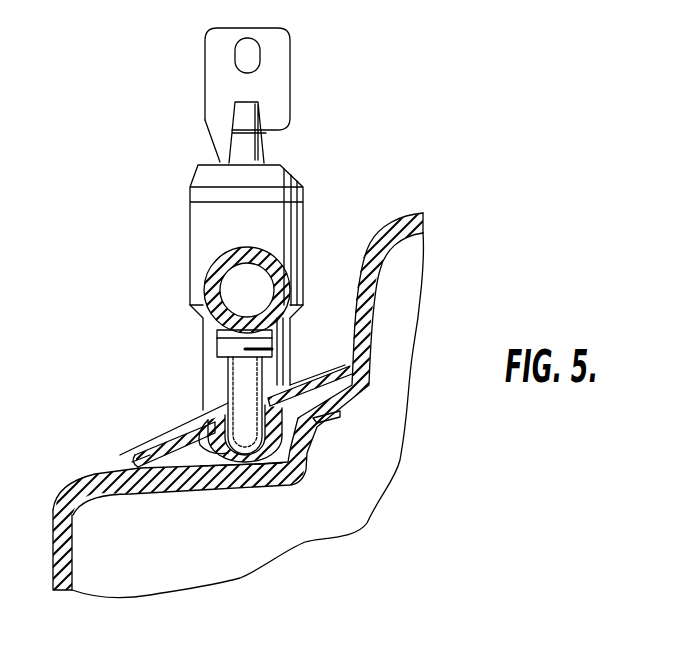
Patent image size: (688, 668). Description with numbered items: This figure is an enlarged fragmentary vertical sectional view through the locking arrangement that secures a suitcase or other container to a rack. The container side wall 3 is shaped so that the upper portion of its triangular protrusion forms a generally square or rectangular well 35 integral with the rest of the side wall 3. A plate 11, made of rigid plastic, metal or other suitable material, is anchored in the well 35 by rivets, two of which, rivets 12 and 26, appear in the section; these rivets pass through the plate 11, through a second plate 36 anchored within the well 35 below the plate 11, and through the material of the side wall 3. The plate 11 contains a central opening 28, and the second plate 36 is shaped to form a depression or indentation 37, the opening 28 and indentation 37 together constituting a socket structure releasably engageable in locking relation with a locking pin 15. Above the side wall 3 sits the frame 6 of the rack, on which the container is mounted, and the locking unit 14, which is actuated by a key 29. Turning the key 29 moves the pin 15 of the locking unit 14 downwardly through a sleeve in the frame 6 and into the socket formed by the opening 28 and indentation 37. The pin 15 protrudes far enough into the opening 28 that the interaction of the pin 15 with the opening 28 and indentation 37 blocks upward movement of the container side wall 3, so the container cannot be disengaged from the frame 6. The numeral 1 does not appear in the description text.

The body panel wall 1 is at (428, 283).
The side wall 3 is at (65, 570).
The frame 6 is at (212, 272).
The plate 11 is at (187, 442).
The rivet 12 is at (168, 445).
The locking unit 14 is at (190, 210).
The locking pin 15 is at (236, 372).
The rivet 26 is at (326, 380).
The central opening 28 is at (210, 428).
The key 29 is at (286, 94).
The well 35 is at (266, 386).
The second plate 36 is at (197, 480).
The indentation 37 is at (233, 480).